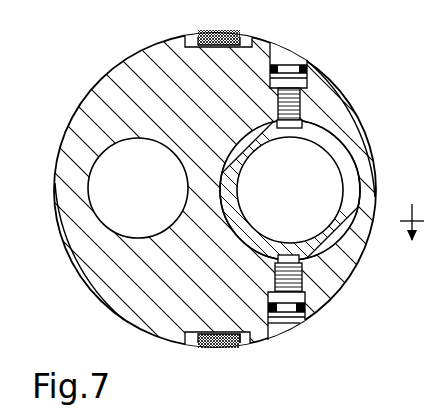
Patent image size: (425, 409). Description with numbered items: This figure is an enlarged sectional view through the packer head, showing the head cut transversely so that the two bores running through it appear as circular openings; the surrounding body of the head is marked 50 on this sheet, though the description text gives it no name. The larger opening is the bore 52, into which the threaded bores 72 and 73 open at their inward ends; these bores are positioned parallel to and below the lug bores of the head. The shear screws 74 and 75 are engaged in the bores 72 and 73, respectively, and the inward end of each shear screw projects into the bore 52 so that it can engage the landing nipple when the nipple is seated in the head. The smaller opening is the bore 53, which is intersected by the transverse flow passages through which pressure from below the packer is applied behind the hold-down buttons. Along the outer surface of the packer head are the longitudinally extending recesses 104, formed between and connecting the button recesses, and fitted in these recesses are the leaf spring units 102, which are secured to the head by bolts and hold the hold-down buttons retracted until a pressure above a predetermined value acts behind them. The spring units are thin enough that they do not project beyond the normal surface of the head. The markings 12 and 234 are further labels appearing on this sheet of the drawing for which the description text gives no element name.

The shoe body 50 is at (103, 76).
The bore 52 is at (351, 159).
The bore 53 is at (99, 166).
The bore 72 is at (273, 56).
The bore 73 is at (278, 328).
The shear screw 74 is at (292, 64).
The shear screw 75 is at (292, 318).
The leaf spring unit 102 is at (216, 32).
The longitudinally extending recess 104 is at (252, 344).
The direction arrow 12 is at (411, 212).
The reference label 234 is at (407, 293).